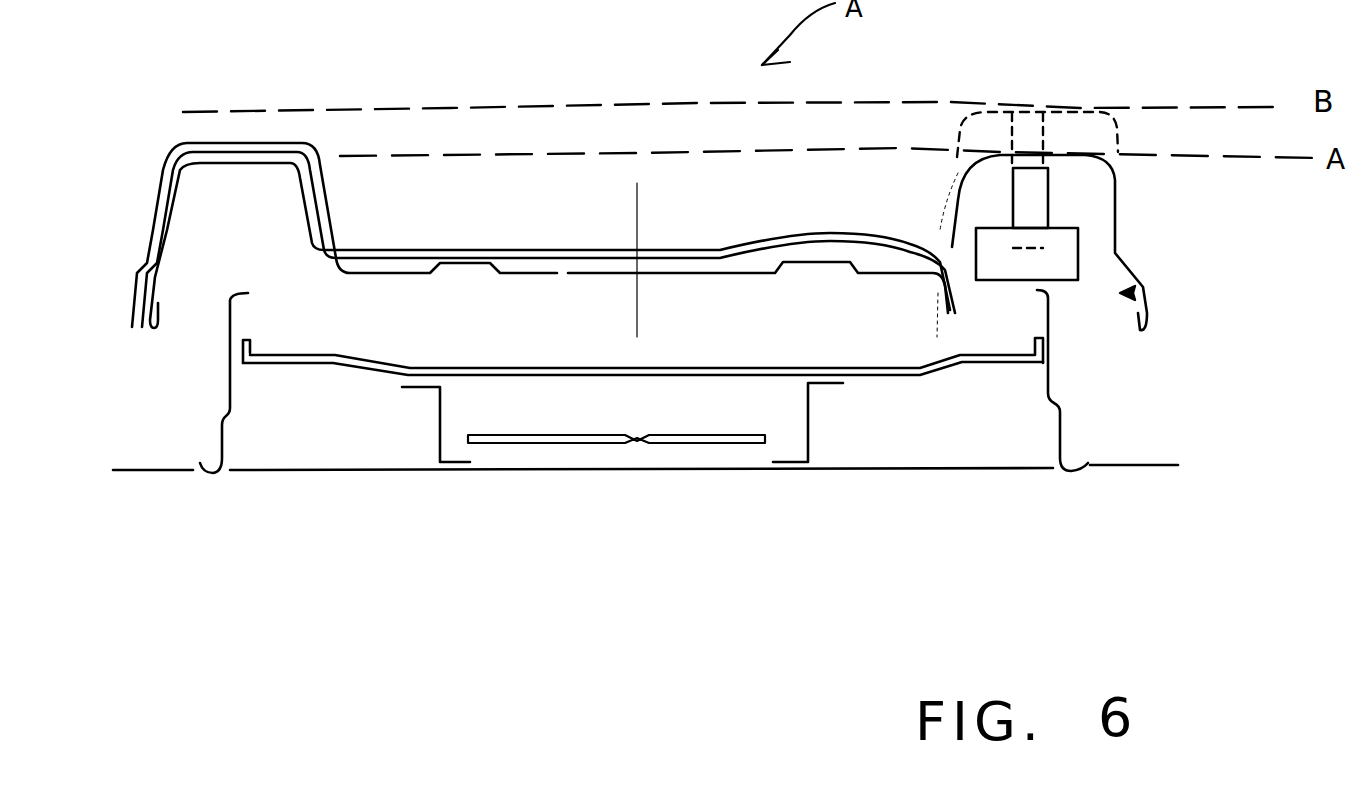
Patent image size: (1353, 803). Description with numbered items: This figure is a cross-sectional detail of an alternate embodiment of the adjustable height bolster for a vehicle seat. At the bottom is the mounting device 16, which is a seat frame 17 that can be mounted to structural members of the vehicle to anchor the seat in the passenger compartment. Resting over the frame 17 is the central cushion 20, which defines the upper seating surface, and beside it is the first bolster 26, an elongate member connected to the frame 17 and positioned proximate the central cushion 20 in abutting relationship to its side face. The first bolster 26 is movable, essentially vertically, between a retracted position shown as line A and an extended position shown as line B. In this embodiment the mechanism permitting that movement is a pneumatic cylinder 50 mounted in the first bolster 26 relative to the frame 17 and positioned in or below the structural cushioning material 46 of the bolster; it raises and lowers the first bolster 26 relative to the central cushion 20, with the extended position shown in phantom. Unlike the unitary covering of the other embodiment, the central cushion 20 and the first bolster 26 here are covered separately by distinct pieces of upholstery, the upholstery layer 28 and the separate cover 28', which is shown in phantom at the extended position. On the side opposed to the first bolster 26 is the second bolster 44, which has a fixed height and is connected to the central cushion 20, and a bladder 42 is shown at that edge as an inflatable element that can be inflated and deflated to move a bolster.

The mounting device 16 is at (1062, 413).
The seat frame 17 is at (1050, 363).
The central cushion 20 is at (673, 297).
The first bolster 26 is at (1125, 293).
The upholstery layer 28 is at (639, 250).
The upholstery layer 28' is at (1088, 180).
The bladder 42 is at (222, 235).
The second bolster 44 is at (280, 147).
The structural cushioning material 46 is at (1108, 253).
The pneumatic cylinder 50 is at (1070, 240).